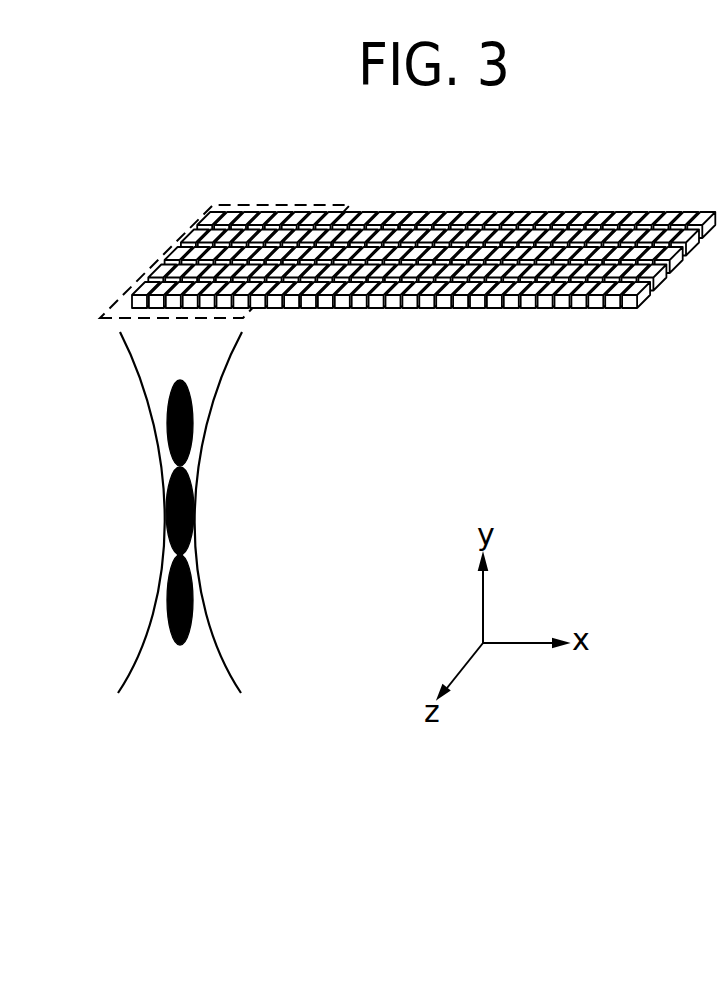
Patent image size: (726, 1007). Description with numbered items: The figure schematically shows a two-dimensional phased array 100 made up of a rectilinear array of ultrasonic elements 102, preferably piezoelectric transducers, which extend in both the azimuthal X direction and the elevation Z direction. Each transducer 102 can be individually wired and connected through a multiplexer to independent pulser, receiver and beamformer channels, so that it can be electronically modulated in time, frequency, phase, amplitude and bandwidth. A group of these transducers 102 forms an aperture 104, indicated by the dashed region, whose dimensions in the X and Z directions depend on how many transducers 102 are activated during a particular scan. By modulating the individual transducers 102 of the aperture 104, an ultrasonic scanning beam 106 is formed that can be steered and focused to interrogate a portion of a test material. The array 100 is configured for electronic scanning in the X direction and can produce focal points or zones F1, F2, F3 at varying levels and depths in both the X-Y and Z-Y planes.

The two-dimensional phased array 100 is at (423, 256).
The ultrasonic element 102 is at (491, 303).
The aperture 104 is at (248, 205).
The ultrasonic scanning beam 106 is at (223, 370).
The focal point F1 is at (167, 418).
The focal point F2 is at (165, 496).
The focal point F3 is at (165, 588).